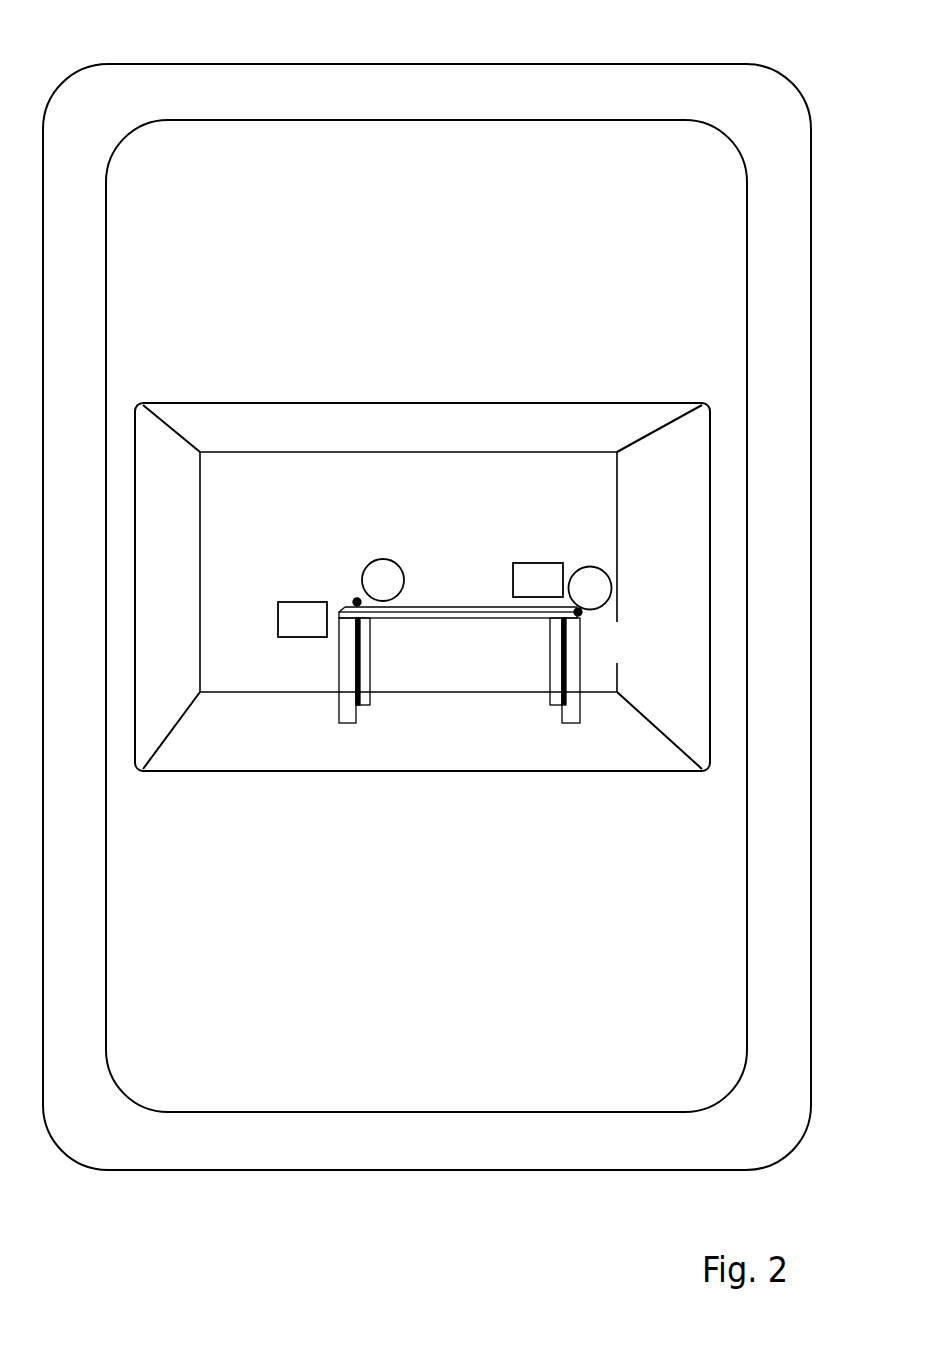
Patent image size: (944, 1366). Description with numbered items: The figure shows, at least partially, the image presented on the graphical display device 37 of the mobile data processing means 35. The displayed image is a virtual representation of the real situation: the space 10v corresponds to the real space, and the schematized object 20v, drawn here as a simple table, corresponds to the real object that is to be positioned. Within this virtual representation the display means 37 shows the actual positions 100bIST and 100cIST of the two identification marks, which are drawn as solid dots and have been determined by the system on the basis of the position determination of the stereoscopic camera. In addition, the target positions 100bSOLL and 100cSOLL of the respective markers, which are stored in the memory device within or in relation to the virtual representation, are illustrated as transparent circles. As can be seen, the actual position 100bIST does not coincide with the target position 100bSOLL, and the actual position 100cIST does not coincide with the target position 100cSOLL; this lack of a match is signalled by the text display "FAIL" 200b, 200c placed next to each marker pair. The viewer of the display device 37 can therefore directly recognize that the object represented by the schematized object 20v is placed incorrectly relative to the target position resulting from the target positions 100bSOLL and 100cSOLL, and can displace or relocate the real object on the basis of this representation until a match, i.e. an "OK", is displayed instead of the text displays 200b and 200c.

The mobile data processing means 35 is at (496, 78).
The graphical display device 37 is at (428, 228).
The virtual space 10v is at (325, 410).
The schematized object 20v is at (438, 608).
The target position of identification mark 100c 100cSOLL is at (372, 562).
The actual position of identification mark 100c 100cIST is at (352, 598).
The target position of identification mark 100b 100bSOLL is at (607, 574).
The actual position of identification mark 100b 100bIST is at (582, 616).
The text display "FAIL" 200b is at (541, 561).
The text display "FAIL" 200c is at (292, 638).